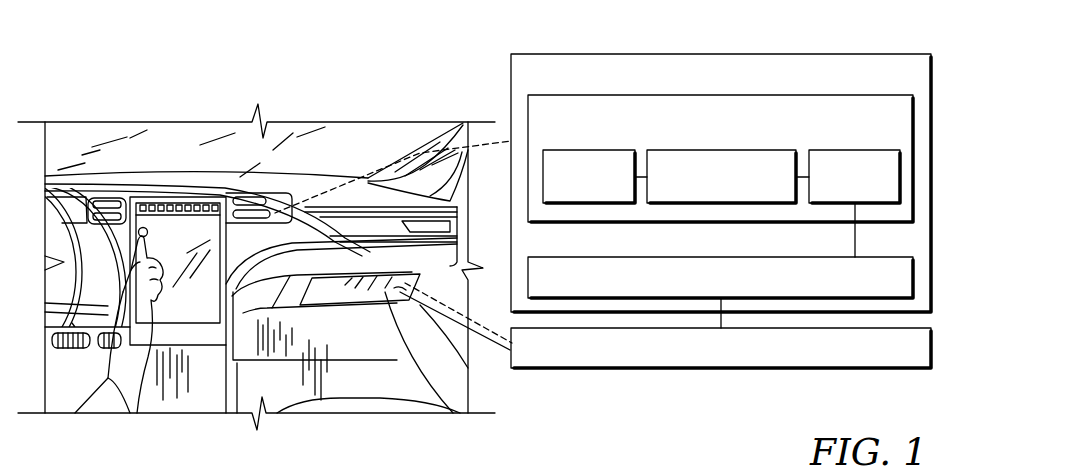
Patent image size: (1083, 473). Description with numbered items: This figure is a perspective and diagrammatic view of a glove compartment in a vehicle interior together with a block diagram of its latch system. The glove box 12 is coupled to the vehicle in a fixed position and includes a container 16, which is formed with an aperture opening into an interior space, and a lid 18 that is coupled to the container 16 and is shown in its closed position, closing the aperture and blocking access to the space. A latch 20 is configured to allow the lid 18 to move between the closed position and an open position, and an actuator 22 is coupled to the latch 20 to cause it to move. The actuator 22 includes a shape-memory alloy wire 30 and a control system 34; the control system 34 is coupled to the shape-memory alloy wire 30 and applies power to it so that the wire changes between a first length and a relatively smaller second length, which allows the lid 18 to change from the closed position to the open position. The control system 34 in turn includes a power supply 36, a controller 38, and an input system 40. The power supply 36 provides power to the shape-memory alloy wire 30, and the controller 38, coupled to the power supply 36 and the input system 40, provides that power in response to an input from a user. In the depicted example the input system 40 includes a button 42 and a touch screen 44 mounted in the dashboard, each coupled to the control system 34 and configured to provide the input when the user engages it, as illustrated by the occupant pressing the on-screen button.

The glove box 12 is at (315, 372).
The container 16 is at (352, 298).
The lid 18 is at (398, 292).
The latch 20 is at (884, 370).
The actuator 22 is at (880, 54).
The shape-memory alloy wire 30 is at (574, 257).
The control system 34 is at (570, 94).
The power supply 36 is at (858, 150).
The controller 38 is at (697, 150).
The input system 40 is at (332, 265).
The button 42 is at (142, 228).
The touch screen 44 is at (177, 223).